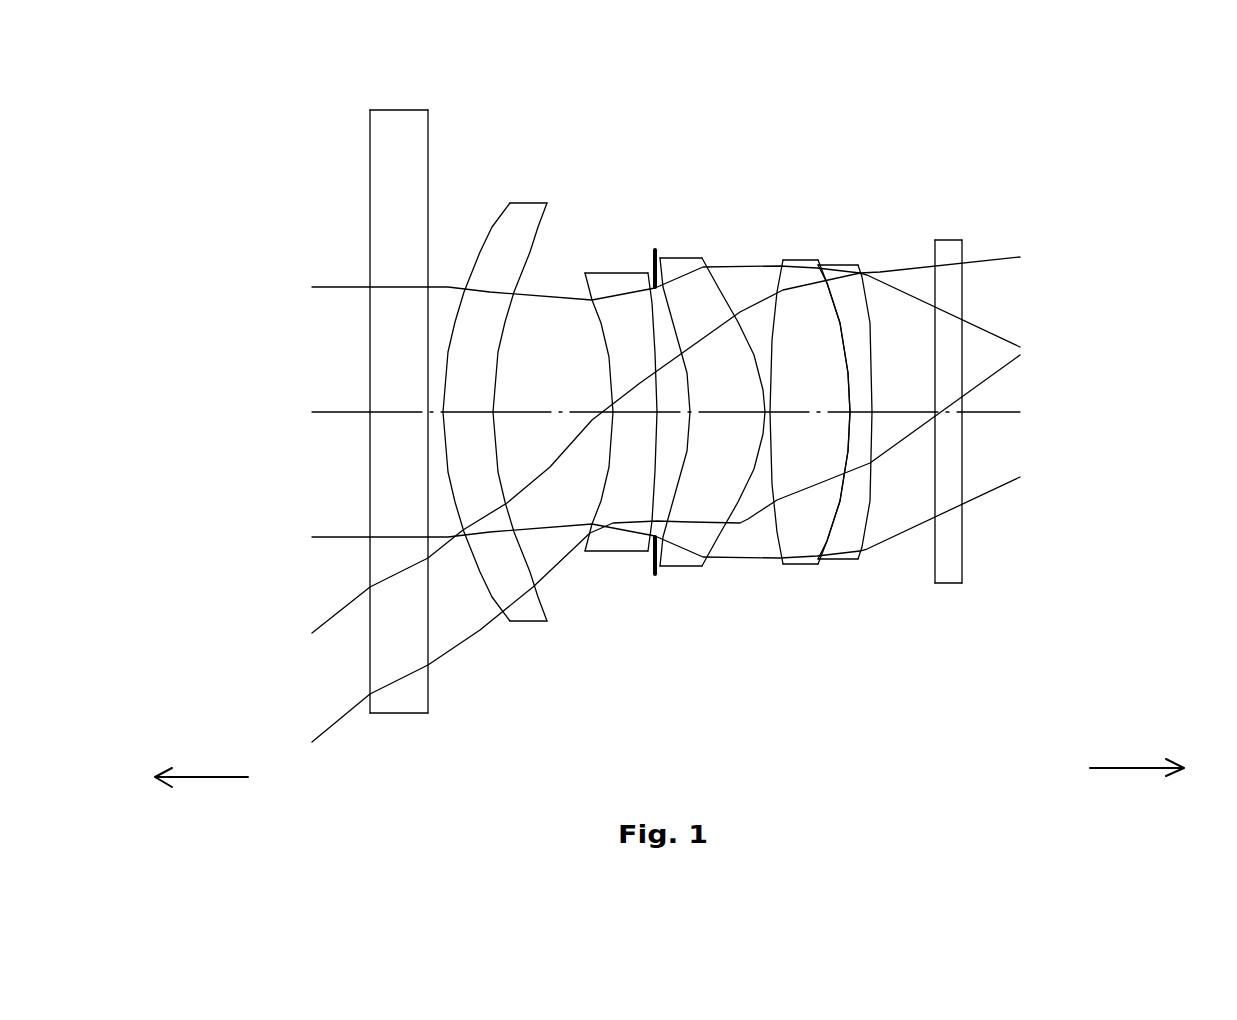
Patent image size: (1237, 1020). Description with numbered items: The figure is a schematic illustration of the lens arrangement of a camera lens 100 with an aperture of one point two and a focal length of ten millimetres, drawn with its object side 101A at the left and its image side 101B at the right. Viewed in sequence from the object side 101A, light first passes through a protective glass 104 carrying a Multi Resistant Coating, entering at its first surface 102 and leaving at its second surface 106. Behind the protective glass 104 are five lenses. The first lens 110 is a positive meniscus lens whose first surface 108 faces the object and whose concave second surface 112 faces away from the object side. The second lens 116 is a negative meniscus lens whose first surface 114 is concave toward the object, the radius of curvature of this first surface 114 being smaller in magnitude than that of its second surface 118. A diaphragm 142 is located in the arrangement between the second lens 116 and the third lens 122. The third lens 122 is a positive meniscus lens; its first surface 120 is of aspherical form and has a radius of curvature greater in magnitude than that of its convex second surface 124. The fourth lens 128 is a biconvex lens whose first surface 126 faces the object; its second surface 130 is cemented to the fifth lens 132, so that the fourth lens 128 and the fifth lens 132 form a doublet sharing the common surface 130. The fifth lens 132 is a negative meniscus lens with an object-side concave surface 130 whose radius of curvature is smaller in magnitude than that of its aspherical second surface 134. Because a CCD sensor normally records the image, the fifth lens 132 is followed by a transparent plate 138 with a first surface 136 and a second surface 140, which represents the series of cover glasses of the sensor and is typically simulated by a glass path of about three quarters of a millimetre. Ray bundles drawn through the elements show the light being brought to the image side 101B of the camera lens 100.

The camera lens 100 is at (1138, 68).
The object side of the camera lens 101A is at (197, 777).
The image side of the camera lens 101B is at (1116, 767).
The first surface of the protective glass 102 is at (370, 180).
The protective glass 104 is at (410, 107).
The second surface of the protective glass 106 is at (428, 237).
The first surface of the lens 110 108 is at (480, 573).
The first lens of the camera lens 110 is at (534, 200).
The second surface of the lens 110 112 is at (528, 567).
The first surface of the lens 116 114 is at (607, 497).
The second lens of the camera lens 116 is at (620, 273).
The second surface of the lens 116 118 is at (690, 563).
The first surface of the lens 122 120 is at (713, 560).
The third lens of the camera lens 122 is at (688, 260).
The second surface of the lens 122 124 is at (725, 560).
The first surface of the lens 128 126 is at (800, 563).
The fourth lens of the camera lens 128 is at (803, 263).
The second surface of the lens 128 / first surface of the lens 132 130 is at (845, 513).
The fifth lens of the camera lens 132 is at (852, 265).
The second surface of the lens 132 134 is at (872, 503).
The first surface of the transparent plate 138 136 is at (937, 473).
The transparent plate 138 is at (950, 240).
The second surface of the transparent plate 138 140 is at (962, 300).
The diaphragm 142 is at (655, 252).